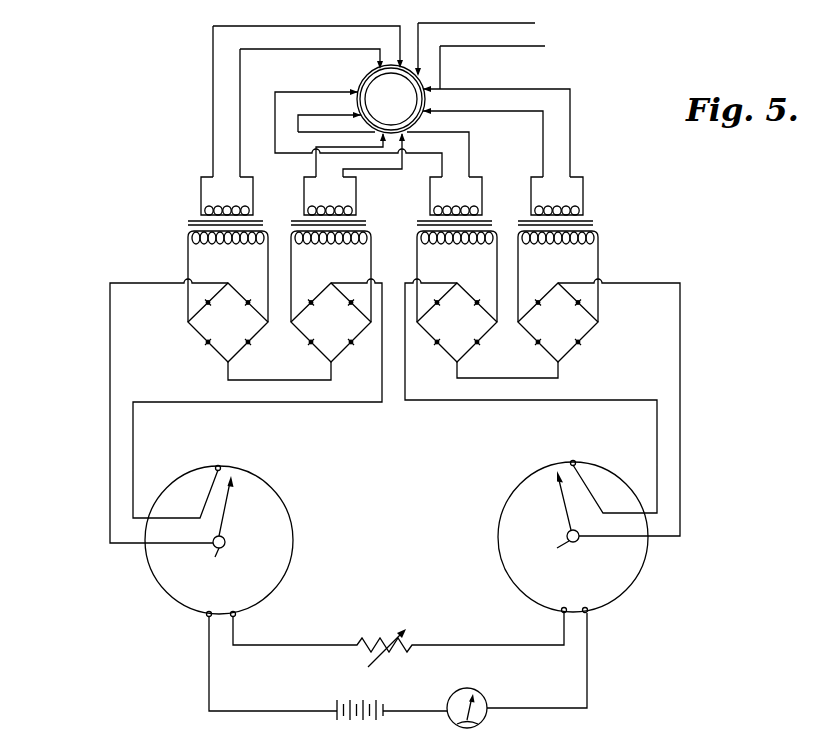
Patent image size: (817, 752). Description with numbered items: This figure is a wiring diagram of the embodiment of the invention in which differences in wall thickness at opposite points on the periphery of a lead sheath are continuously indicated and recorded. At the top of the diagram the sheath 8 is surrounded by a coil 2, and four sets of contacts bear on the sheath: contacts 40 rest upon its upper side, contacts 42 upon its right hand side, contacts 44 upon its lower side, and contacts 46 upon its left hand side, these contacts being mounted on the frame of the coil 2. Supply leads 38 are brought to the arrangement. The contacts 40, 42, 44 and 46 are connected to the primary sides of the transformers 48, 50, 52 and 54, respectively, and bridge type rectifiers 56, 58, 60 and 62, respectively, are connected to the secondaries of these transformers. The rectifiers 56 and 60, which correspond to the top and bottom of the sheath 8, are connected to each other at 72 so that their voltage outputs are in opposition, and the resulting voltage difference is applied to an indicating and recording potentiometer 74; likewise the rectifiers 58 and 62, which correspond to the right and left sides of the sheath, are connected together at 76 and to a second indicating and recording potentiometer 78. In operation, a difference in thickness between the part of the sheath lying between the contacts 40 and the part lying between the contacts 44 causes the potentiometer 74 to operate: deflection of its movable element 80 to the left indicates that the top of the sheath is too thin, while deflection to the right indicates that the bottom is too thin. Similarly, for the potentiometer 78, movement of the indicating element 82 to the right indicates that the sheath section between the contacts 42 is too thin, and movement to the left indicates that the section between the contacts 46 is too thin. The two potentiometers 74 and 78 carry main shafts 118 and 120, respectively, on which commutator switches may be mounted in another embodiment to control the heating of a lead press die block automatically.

The coil 2 is at (356, 117).
The sheath 8 is at (362, 78).
The power supply leads 38 is at (535, 38).
The contacts 40 is at (399, 79).
The contacts 42 is at (416, 100).
The contacts 44 is at (391, 128).
The contacts 46 is at (358, 133).
The transformer 48 is at (185, 224).
The transformer 50 is at (566, 249).
The transformer 52 is at (340, 249).
The transformer 54 is at (463, 249).
The bridge type rectifier 56 is at (246, 281).
The bridge type rectifier 58 is at (558, 313).
The bridge type rectifier 60 is at (331, 313).
The bridge type rectifier 62 is at (457, 313).
The connection 72 is at (280, 380).
The connection 76 is at (522, 379).
The indicating and recording potentiometer 74 is at (283, 500).
The indicating and recording potentiometer 78 is at (613, 472).
The movable element 80 is at (228, 510).
The indicating element 82 is at (563, 498).
The main shaft 118 is at (226, 543).
The main shaft 120 is at (574, 542).